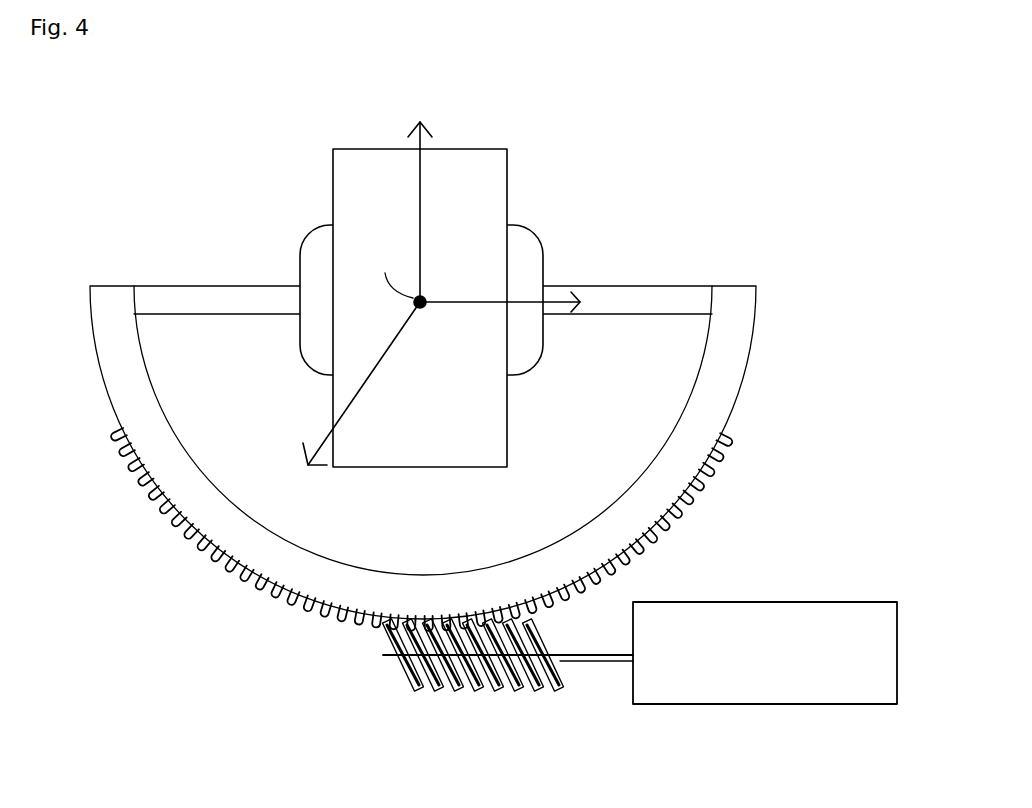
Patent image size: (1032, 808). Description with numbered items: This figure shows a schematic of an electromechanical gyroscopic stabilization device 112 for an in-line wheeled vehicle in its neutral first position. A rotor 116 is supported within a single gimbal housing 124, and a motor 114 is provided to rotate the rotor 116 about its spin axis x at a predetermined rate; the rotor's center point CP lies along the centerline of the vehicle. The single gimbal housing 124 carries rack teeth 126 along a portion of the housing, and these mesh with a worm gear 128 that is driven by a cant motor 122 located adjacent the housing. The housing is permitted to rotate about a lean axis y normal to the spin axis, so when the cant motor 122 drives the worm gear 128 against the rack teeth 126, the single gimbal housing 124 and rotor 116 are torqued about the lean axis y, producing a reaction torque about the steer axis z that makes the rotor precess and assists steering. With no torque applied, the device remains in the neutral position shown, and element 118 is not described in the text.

The electromechanical gyroscopic stabilization device 112 is at (467, 424).
The motor 114 is at (316, 262).
The rotor 116 is at (387, 167).
The top bar of carrier 118 is at (657, 296).
The cant motor 122 is at (725, 601).
The single gimbal housing 124 is at (190, 668).
The rack teeth 126 is at (122, 457).
The worm gear 128 is at (518, 682).